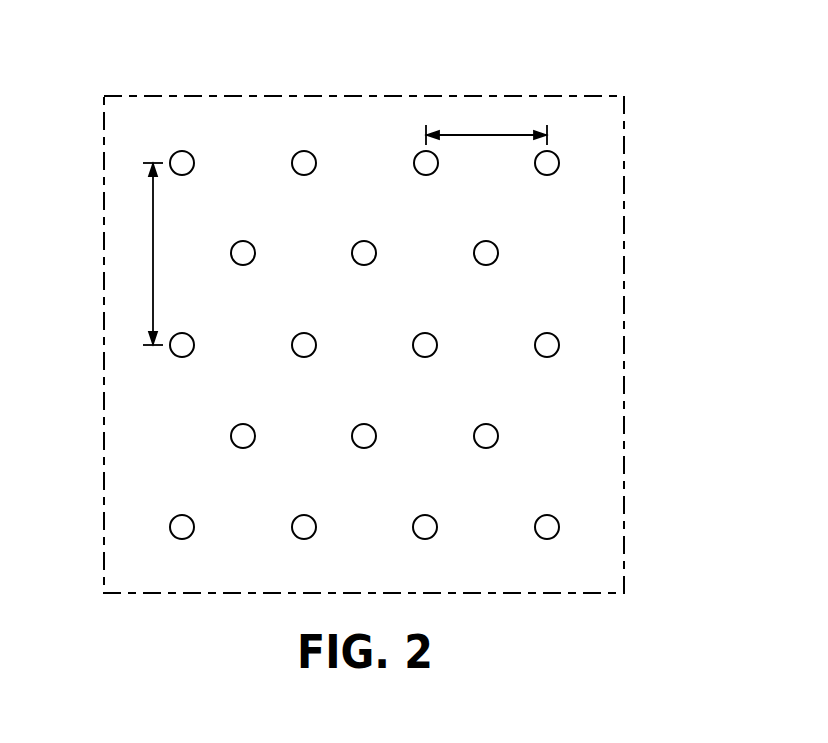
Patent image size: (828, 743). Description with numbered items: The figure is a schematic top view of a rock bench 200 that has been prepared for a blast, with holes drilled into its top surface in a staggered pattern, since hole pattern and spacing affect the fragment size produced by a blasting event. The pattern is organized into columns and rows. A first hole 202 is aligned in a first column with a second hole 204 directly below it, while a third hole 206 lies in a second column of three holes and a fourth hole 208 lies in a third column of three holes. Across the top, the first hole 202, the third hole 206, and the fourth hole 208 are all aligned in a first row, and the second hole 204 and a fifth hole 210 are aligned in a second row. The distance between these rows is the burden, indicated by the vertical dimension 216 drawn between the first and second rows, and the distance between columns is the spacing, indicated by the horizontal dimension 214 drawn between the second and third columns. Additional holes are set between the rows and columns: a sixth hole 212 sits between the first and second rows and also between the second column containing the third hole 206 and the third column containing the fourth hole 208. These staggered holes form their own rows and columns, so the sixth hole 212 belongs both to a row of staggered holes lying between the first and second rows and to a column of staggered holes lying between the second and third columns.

The rock bench 200 is at (600, 233).
The first hole 202 is at (194, 159).
The second hole 204 is at (194, 350).
The third hole 206 is at (423, 176).
The fourth hole 208 is at (549, 176).
The fifth hole 210 is at (316, 342).
The sixth hole 212 is at (488, 266).
The spacing between columns 214 is at (485, 134).
The burden between rows 216 is at (153, 250).